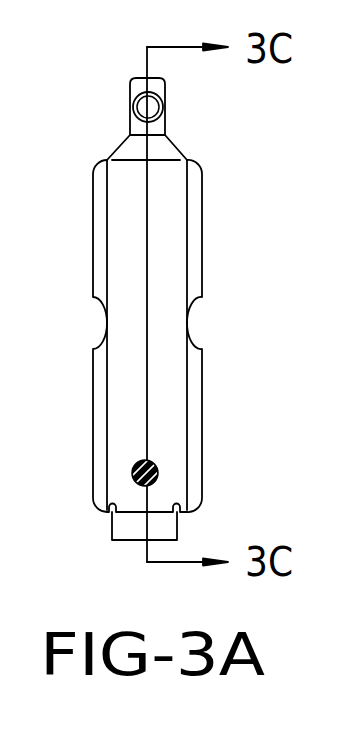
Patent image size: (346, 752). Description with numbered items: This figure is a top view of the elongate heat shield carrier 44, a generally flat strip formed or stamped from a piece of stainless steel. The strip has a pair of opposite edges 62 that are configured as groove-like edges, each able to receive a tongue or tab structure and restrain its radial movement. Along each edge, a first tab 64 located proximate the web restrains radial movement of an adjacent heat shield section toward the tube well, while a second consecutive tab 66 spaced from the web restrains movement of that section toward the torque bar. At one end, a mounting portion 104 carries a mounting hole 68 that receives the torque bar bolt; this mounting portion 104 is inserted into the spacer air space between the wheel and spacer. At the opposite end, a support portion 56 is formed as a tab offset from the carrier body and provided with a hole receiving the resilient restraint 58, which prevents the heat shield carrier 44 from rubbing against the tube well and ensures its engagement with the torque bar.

The heat shield carrier 44 is at (116, 132).
The support portion 56 is at (125, 525).
The resilient restraint 58 is at (132, 477).
The opposite edges 62 is at (91, 275).
The first tab 64 is at (98, 410).
The second tab 66 is at (100, 207).
The mounting hole 68 is at (133, 103).
The mounting portion 104 is at (158, 88).